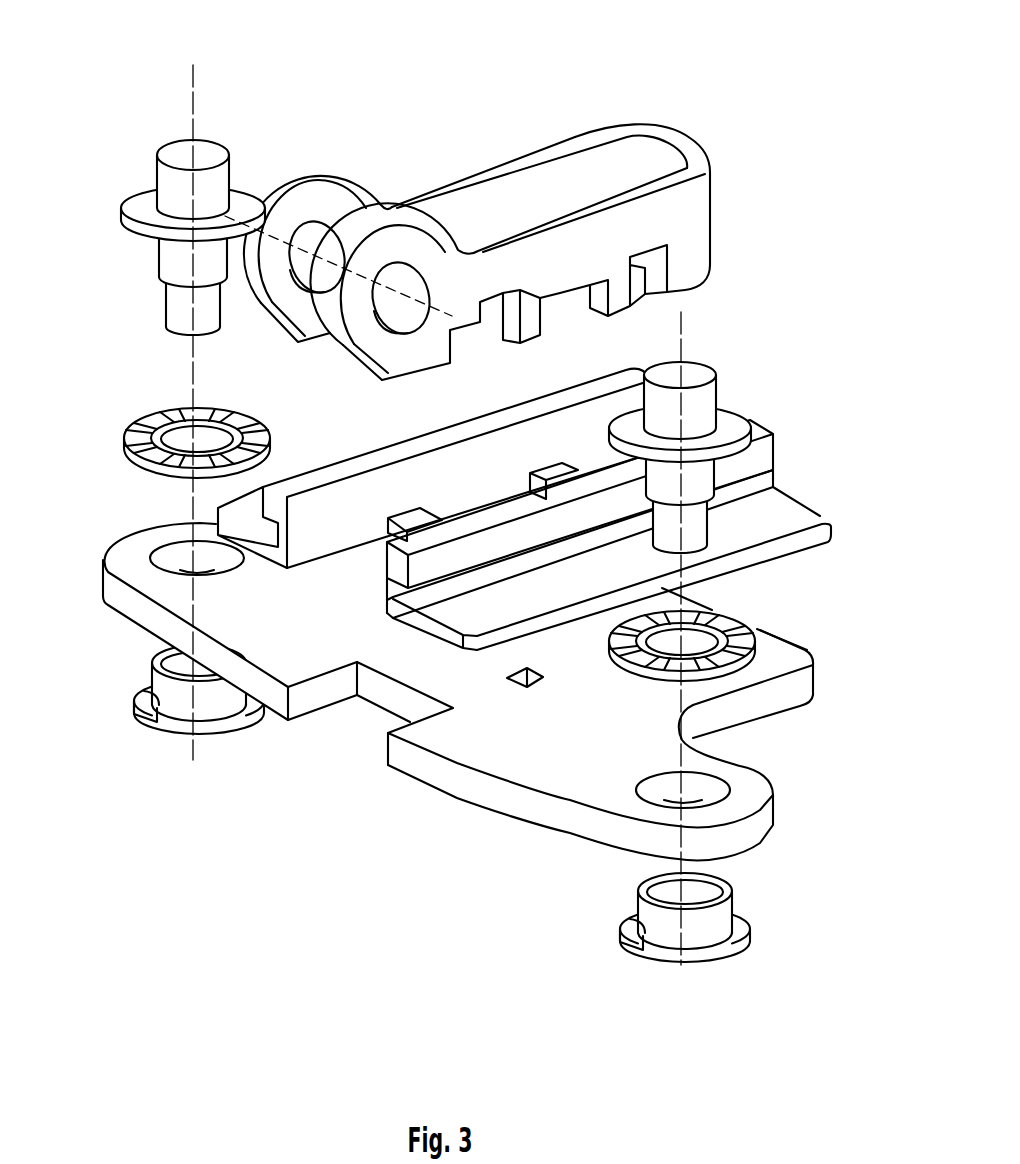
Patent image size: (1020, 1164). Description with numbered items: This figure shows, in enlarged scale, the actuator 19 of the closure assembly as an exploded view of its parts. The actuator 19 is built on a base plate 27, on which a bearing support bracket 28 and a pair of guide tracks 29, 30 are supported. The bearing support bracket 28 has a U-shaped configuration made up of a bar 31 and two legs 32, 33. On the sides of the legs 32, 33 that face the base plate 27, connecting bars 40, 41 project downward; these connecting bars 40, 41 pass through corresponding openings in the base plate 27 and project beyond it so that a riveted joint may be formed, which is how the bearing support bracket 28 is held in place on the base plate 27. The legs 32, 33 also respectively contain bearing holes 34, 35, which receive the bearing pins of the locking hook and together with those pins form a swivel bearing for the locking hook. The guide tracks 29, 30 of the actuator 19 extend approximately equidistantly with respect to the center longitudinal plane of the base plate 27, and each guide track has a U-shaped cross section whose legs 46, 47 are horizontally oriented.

The actuator 19 is at (120, 628).
The base plate 27 is at (498, 783).
The bearing support bracket 28 is at (521, 213).
The guide track 29 is at (576, 651).
The guide track 30 is at (640, 367).
The bar 31 is at (670, 140).
The leg 32 is at (585, 237).
The leg 33 is at (518, 162).
The bearing hole 34 is at (402, 280).
The bearing hole 35 is at (314, 238).
The connecting bar 40 is at (528, 348).
The connecting bar 41 is at (622, 318).
The leg 46 is at (397, 567).
The leg 47 is at (432, 627).